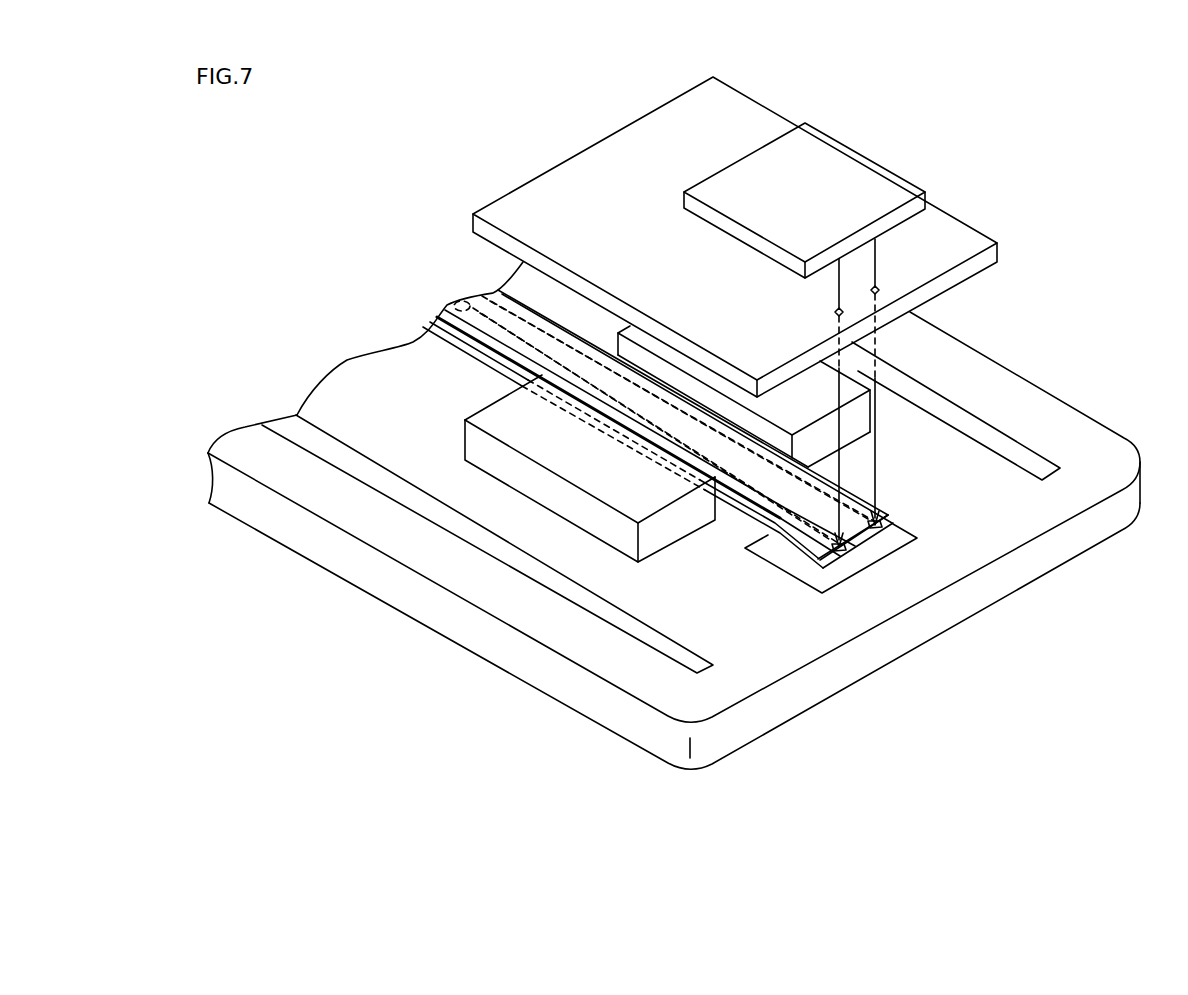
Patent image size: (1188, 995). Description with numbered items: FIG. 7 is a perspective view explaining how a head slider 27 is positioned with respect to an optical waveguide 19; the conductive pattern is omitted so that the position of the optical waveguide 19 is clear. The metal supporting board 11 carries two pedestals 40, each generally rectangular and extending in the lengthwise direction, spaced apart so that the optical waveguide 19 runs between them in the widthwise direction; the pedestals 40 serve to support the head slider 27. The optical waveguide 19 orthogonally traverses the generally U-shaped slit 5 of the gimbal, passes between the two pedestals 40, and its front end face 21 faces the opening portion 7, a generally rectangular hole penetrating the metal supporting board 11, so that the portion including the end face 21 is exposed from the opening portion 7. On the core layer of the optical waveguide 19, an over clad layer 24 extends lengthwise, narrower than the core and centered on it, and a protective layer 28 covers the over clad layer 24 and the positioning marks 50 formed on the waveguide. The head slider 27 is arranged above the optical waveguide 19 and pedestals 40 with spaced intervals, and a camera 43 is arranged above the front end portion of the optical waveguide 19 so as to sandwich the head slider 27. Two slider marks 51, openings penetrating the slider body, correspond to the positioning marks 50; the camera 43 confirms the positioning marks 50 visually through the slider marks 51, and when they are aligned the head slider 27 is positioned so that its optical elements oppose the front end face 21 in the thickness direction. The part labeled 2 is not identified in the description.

The base 2 is at (574, 712).
The slit 5 is at (650, 635).
The opening portion 7 is at (800, 572).
The metal supporting board 11 is at (484, 636).
The optical waveguide 19 is at (448, 350).
The front end face 21 is at (857, 557).
The over clad layer 24 is at (452, 306).
The head slider 27 is at (958, 226).
The protective layer 28 is at (840, 467).
The pedestal 40 is at (670, 547).
The camera 43 is at (853, 150).
The positioning marks 50 is at (890, 516).
The slider marks 51 is at (876, 288).